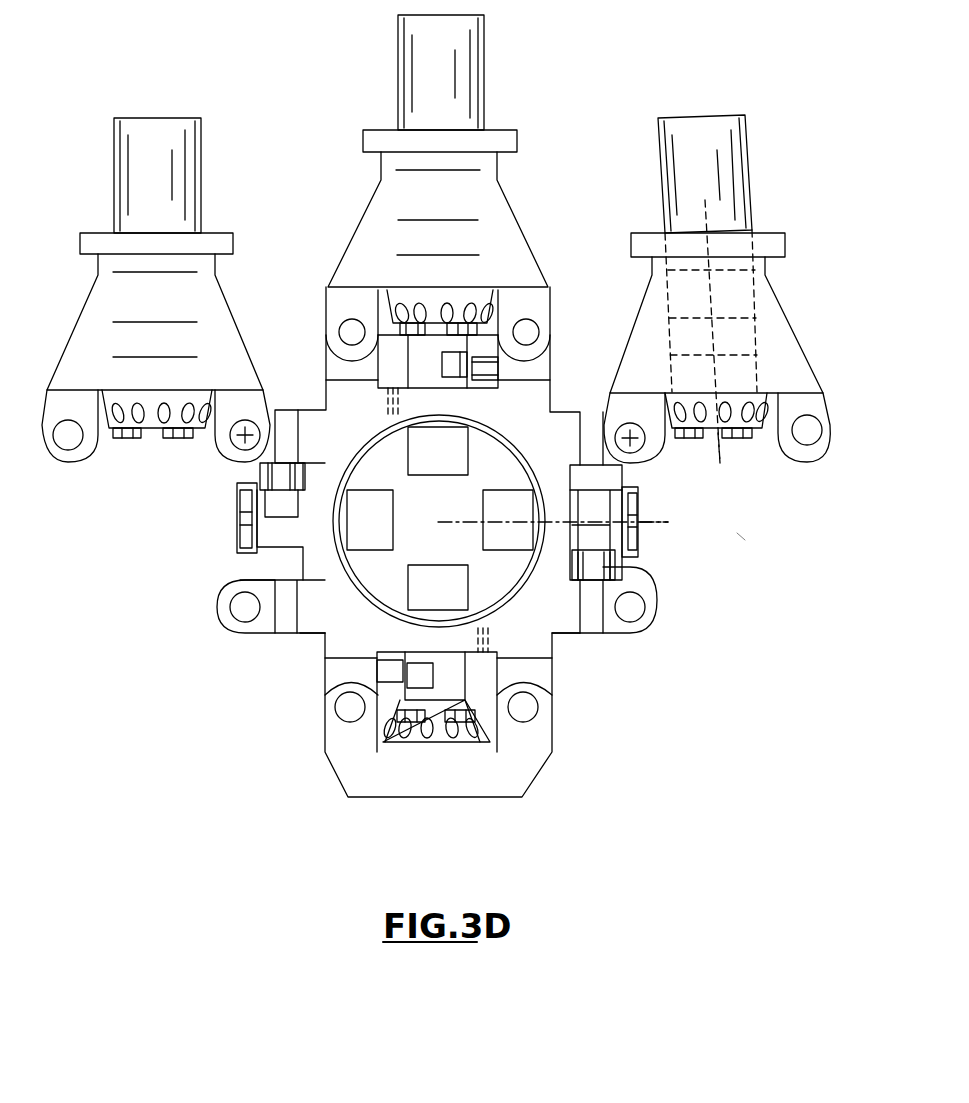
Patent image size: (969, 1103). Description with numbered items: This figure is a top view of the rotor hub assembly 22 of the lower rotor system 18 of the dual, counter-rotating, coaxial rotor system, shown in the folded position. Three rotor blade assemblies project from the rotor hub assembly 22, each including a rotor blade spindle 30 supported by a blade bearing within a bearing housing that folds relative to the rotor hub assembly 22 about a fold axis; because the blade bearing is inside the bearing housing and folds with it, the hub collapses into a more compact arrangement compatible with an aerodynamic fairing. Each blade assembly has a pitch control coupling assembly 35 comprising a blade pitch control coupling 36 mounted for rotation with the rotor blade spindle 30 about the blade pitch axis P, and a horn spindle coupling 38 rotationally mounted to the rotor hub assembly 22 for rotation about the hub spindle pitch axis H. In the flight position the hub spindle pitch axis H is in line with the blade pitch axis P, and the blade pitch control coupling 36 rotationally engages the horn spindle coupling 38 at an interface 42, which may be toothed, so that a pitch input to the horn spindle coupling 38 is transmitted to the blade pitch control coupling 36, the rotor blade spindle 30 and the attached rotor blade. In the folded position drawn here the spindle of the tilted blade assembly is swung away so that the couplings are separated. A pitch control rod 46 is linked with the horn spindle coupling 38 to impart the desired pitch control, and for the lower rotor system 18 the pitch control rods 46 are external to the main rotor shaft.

The lower rotor system 18 is at (455, 406).
The rotor hub assembly 22 is at (459, 542).
The rotor blade spindle 30 is at (736, 289).
The pitch control coupling assembly 35 is at (737, 533).
The blade pitch control coupling 36 is at (757, 387).
The horn spindle coupling 38 is at (603, 498).
The interface 42 is at (638, 517).
The pitch control rod 46 is at (600, 568).
The blade pitch axis P is at (720, 450).
The hub spindle pitch axis H is at (653, 523).